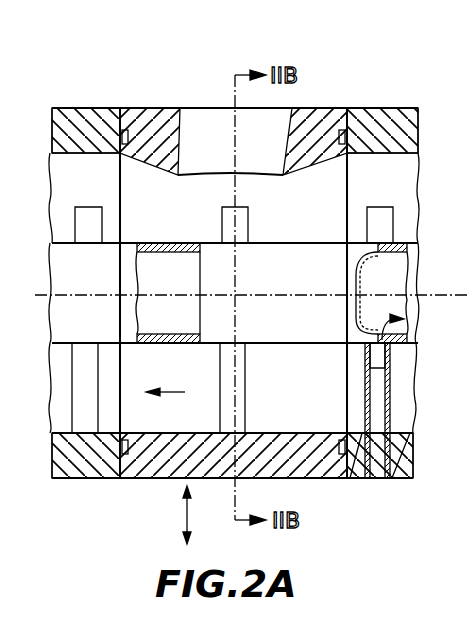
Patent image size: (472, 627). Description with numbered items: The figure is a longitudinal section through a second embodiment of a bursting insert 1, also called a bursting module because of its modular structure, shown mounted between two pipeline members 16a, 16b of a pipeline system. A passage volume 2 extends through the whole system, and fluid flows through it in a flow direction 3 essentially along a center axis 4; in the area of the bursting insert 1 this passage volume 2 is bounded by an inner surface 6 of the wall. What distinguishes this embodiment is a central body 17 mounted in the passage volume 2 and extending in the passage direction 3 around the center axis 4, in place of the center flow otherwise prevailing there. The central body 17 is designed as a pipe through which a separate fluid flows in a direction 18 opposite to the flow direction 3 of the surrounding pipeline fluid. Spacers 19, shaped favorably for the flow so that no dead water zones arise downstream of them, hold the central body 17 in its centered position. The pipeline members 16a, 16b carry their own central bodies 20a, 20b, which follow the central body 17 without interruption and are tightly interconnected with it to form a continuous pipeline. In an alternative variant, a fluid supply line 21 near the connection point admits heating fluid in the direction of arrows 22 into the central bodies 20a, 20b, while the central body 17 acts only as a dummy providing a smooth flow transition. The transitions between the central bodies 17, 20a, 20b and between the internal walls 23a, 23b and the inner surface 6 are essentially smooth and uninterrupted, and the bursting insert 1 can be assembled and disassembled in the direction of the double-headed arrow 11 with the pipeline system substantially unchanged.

The bursting insert 1 is at (413, 98).
The passage volume 2 is at (298, 217).
The flow direction 3 is at (184, 370).
The center axis 4 is at (428, 268).
The inner surface 6 is at (165, 172).
The double-headed arrow 11 is at (182, 516).
The pipeline member 16a is at (97, 125).
The pipeline member 16b is at (386, 125).
The central body 17 is at (293, 320).
The flow direction 18 is at (176, 318).
The spacers 19 is at (246, 410).
The central body 20a is at (95, 312).
The central body 20b is at (402, 325).
The fluid supply line 21 is at (400, 456).
The arrows 22 is at (393, 508).
The internal wall 23a is at (66, 157).
The internal wall 23b is at (396, 157).